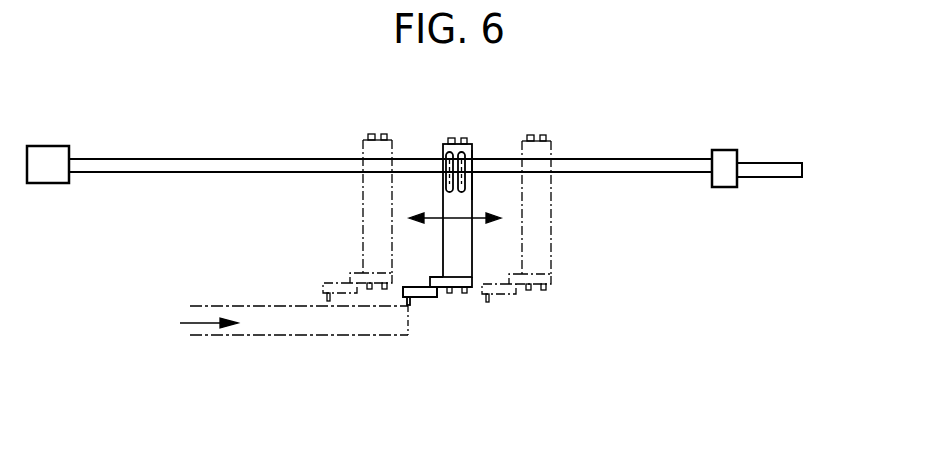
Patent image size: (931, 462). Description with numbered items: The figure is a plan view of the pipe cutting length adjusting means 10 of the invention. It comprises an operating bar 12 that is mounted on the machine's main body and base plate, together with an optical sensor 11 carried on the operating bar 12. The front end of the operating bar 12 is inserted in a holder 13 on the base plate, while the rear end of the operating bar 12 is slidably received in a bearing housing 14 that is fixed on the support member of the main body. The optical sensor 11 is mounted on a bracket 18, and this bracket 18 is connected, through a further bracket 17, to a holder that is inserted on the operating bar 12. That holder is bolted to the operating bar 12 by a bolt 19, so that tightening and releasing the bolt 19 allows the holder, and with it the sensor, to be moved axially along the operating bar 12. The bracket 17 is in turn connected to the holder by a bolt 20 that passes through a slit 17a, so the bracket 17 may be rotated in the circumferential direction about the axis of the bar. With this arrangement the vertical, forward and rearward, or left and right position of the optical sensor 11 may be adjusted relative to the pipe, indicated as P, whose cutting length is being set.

The pipe cutting length adjusting means 10 is at (584, 252).
The optical sensor 11 is at (410, 305).
The operating bar 12 is at (236, 159).
The holder 13 is at (43, 146).
The bearing housing 14 is at (722, 150).
The bracket 17 is at (465, 198).
The slit 17a is at (470, 156).
The bracket 18 is at (411, 290).
The bolt 19 is at (458, 152).
The bolt 20 is at (447, 163).
The paper P is at (214, 306).